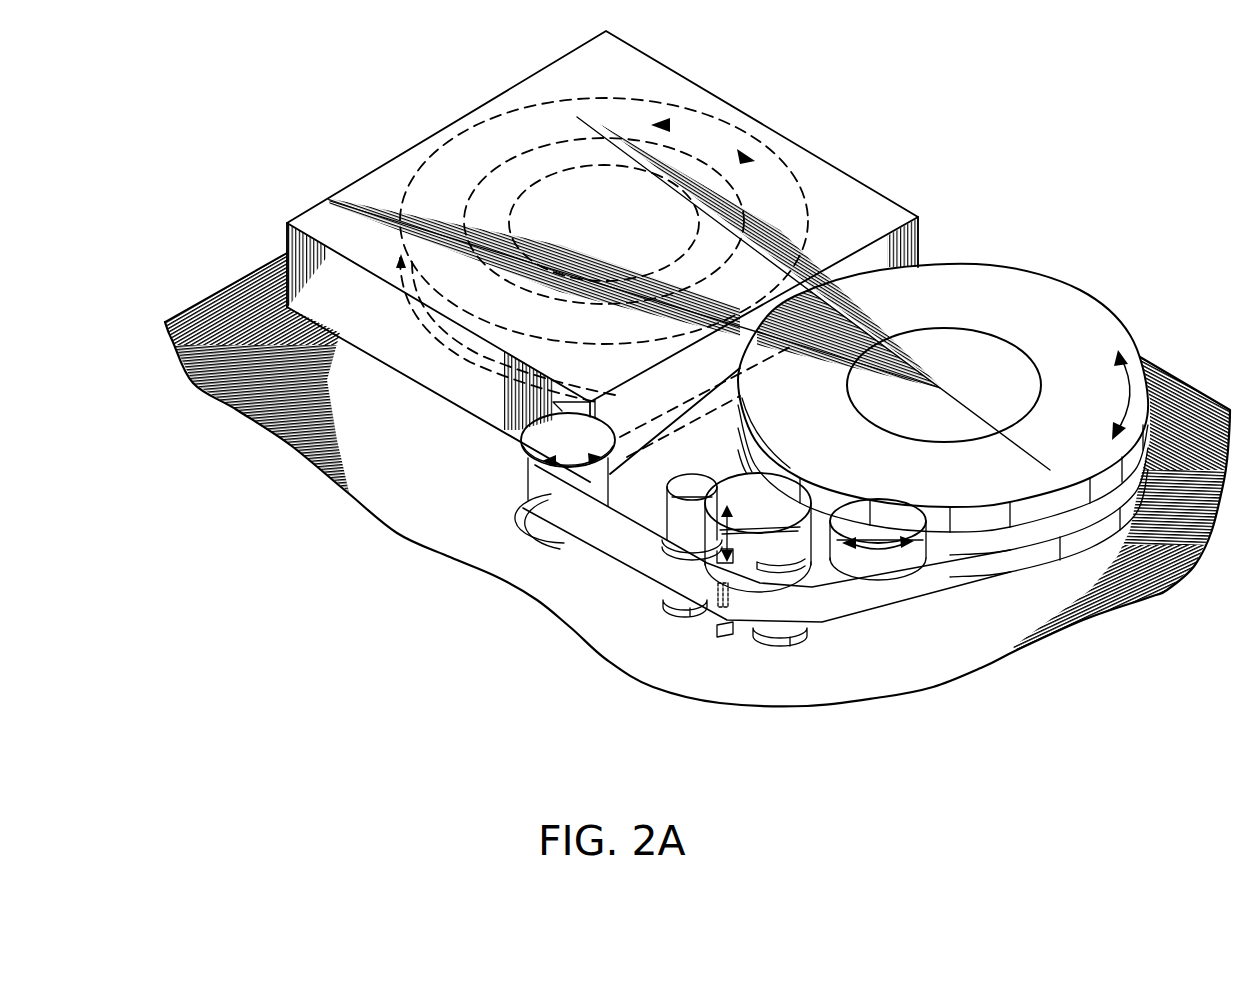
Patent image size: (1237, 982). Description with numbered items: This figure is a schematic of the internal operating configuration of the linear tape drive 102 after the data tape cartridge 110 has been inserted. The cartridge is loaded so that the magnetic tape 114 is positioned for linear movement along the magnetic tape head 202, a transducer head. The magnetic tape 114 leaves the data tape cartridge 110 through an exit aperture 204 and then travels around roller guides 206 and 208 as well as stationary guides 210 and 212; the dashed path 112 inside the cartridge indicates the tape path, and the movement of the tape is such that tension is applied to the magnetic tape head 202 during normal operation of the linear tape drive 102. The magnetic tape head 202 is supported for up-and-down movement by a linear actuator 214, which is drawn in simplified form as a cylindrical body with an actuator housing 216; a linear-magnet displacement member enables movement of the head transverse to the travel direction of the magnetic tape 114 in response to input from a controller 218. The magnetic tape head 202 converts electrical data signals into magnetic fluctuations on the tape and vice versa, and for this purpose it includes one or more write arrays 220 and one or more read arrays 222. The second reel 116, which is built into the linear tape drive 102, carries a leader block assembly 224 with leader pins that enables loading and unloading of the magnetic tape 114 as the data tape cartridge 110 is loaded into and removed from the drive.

The linear tape drive 102 is at (636, 801).
The data tape cartridge 110 is at (325, 227).
The tape path 112 is at (460, 160).
The magnetic tape 114 is at (945, 573).
The second reel 116 is at (1065, 320).
The magnetic tape head 202 is at (720, 634).
The exit aperture 204 is at (558, 392).
The roller guide 206 is at (542, 432).
The roller guide 208 is at (877, 522).
The stationary guide 210 is at (673, 617).
The stationary guide 212 is at (777, 644).
The linear actuator 214 is at (805, 480).
The actuator housing 216 is at (763, 490).
The controller 218 is at (683, 487).
The write array 220 is at (720, 584).
The read array 222 is at (730, 590).
The leader block assembly 224 is at (1033, 398).